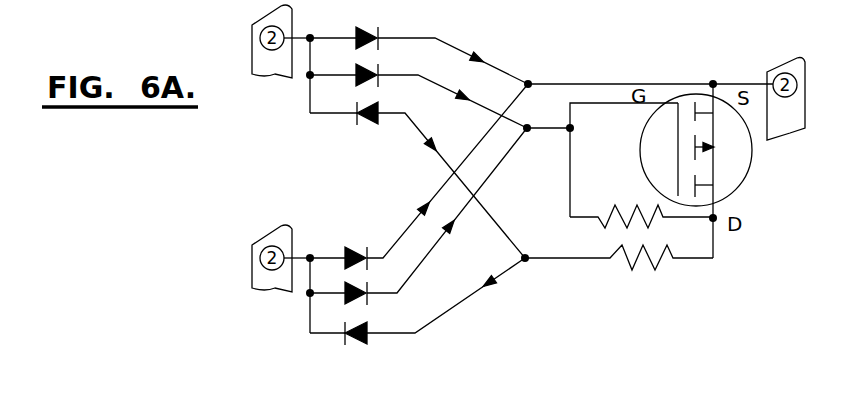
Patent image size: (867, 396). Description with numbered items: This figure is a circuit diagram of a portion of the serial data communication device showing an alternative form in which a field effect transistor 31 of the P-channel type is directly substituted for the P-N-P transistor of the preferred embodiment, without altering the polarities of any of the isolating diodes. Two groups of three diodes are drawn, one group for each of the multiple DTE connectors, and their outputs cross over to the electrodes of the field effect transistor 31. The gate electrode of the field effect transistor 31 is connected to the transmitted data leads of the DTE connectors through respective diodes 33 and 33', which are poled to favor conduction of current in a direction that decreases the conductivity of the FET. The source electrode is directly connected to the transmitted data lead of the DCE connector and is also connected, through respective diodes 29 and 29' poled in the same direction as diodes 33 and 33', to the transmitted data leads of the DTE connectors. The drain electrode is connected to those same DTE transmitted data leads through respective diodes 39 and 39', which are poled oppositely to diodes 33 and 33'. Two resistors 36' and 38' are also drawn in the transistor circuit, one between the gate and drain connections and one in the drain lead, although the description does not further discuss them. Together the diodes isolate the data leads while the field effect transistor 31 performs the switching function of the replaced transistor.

The diode 29 is at (419, 42).
The diode 33 is at (418, 87).
The diode 39 is at (417, 180).
The diode 29' is at (419, 177).
The diode 33' is at (418, 227).
The diode 39' is at (417, 322).
The field effect transistor 31 is at (741, 190).
The gate resistor 36' is at (641, 195).
The drain resistor 38' is at (619, 282).